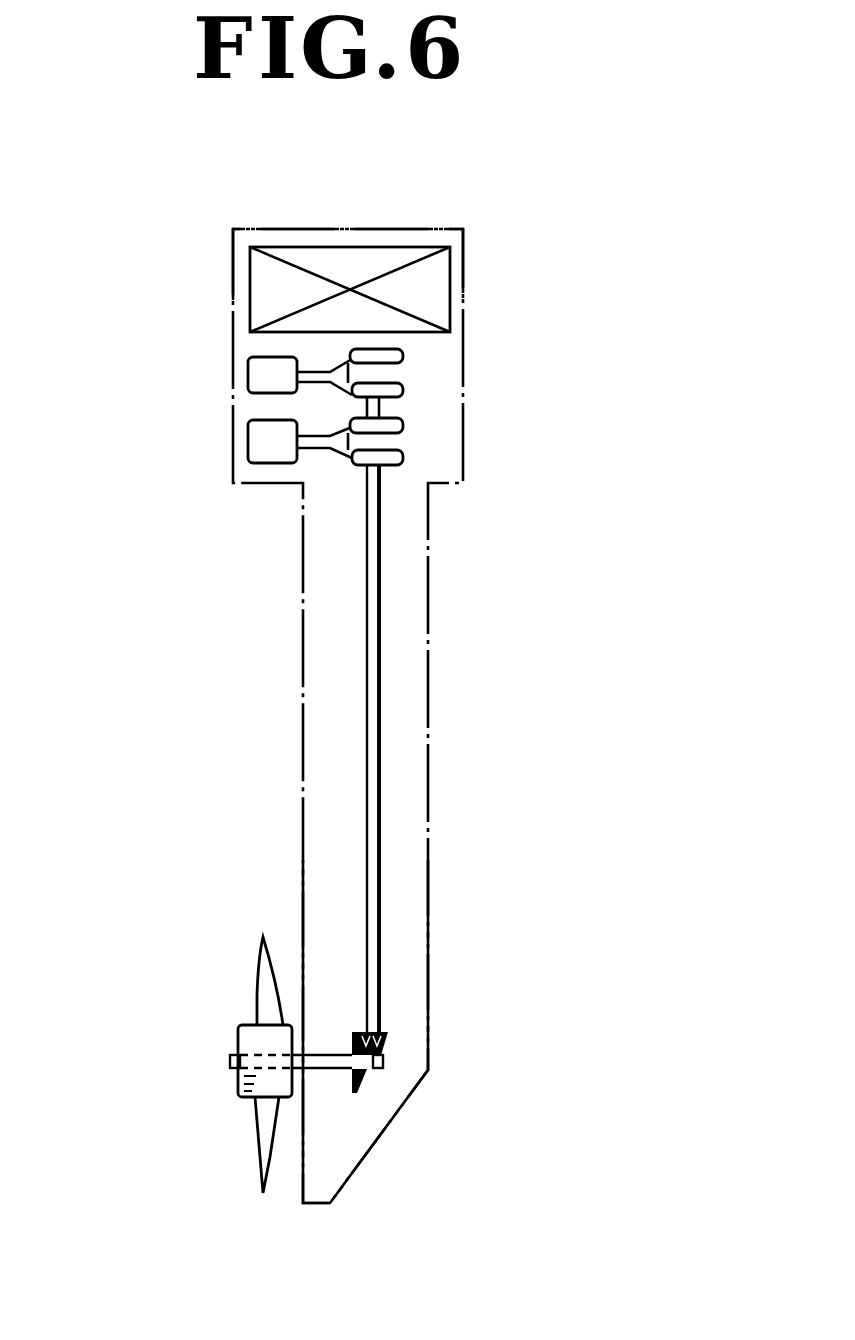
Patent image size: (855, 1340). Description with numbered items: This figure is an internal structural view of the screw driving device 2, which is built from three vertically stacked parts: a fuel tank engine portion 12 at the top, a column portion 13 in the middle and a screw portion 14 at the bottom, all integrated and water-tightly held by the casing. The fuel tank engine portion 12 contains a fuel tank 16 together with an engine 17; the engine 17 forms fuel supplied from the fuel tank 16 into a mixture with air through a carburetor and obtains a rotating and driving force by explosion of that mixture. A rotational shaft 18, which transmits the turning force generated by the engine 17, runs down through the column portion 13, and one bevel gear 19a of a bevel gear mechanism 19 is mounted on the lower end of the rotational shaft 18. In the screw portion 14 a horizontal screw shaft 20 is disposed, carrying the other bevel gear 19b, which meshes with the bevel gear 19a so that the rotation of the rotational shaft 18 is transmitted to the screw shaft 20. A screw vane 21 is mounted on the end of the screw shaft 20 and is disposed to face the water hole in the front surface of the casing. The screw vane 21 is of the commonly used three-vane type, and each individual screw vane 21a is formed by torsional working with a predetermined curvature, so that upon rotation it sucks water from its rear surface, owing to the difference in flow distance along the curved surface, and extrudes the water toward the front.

The screw driving device 2 is at (175, 378).
The fuel tank engine portion 12 is at (470, 354).
The column portion 13 is at (445, 683).
The screw portion 14 is at (440, 983).
The fuel tank 16 is at (445, 270).
The engine 17 is at (412, 387).
The rotational shaft 18 is at (370, 638).
The bevel gear mechanism 19 is at (474, 1045).
The bevel gear 19a is at (390, 1034).
The bevel gear 19b is at (362, 1086).
The horizontal screw shaft 20 is at (330, 1072).
The screw vane 21 is at (239, 1078).
The individual screw vane 21a is at (255, 987).